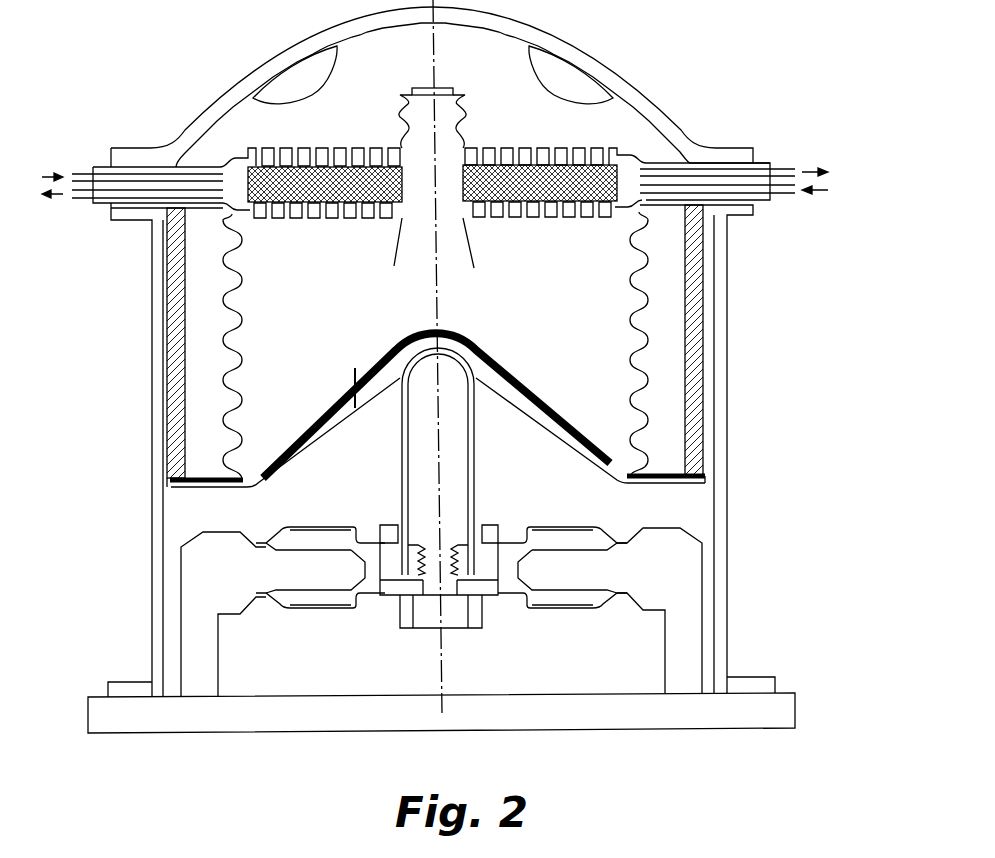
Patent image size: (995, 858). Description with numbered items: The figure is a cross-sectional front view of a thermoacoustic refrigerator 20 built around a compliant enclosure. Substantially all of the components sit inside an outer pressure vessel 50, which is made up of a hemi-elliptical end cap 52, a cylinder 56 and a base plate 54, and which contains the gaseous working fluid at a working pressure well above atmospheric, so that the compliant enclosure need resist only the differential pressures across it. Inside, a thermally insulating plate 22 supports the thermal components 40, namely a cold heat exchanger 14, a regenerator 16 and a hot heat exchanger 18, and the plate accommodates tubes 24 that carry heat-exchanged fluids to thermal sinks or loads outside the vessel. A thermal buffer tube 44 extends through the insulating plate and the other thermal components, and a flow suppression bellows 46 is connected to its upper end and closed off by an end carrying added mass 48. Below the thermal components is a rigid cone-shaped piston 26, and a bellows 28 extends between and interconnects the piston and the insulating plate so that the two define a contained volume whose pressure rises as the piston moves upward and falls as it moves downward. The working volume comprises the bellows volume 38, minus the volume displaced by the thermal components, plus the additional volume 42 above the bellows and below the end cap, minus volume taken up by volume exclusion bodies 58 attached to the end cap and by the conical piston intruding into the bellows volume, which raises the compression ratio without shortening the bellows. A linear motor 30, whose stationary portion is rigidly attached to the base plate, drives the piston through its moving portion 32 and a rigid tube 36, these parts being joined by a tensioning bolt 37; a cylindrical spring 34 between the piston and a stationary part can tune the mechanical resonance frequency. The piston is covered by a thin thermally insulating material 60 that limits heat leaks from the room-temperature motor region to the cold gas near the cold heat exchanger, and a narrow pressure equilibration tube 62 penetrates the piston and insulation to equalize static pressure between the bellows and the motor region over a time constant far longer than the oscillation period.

The cold heat exchanger 14 is at (340, 222).
The regenerator 16 is at (513, 187).
The hot heat exchanger 18 is at (503, 147).
The thermoacoustic refrigerator 20 is at (683, 97).
The thermally insulating plate 22 is at (650, 137).
The tubes 24 is at (88, 172).
The piston 26 is at (557, 437).
The bellows 28 is at (240, 327).
The linear motor 30 is at (665, 663).
The moving portion of the motor 32 is at (493, 520).
The cylindrical spring 34 is at (703, 283).
The rigid tube 36 is at (400, 472).
The tensioning bolt 37 is at (433, 640).
The bellows volume 38 is at (565, 318).
The thermal components 40 is at (277, 182).
The additional volume 42 is at (512, 108).
The thermal buffer tube 44 is at (452, 225).
The flow suppression bellows 46 is at (408, 117).
The added mass 48 is at (440, 87).
The pressure vessel 50 is at (146, 502).
The end cap 52 is at (347, 43).
The base plate 54 is at (327, 700).
The cylinder 56 is at (728, 550).
The volume exclusion bodies 58 is at (273, 101).
The thermally insulating material 60 is at (540, 390).
The pressure equilibration tube 62 is at (350, 373).